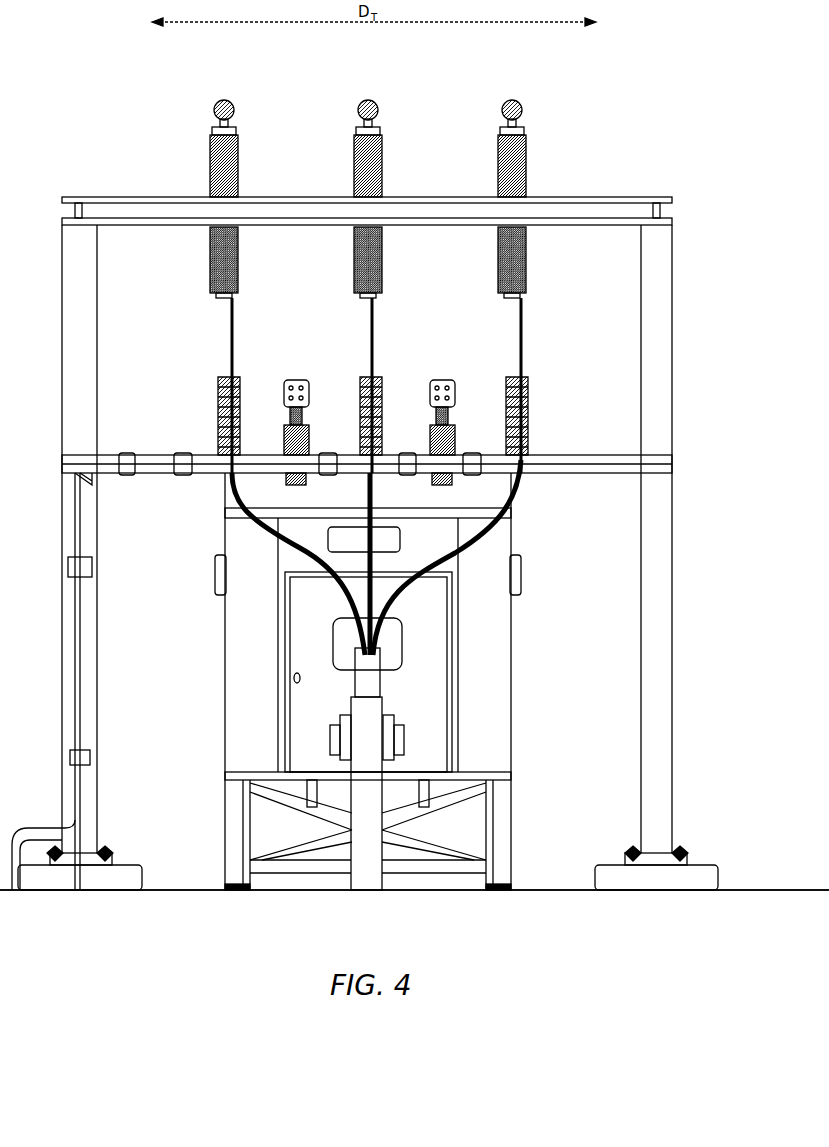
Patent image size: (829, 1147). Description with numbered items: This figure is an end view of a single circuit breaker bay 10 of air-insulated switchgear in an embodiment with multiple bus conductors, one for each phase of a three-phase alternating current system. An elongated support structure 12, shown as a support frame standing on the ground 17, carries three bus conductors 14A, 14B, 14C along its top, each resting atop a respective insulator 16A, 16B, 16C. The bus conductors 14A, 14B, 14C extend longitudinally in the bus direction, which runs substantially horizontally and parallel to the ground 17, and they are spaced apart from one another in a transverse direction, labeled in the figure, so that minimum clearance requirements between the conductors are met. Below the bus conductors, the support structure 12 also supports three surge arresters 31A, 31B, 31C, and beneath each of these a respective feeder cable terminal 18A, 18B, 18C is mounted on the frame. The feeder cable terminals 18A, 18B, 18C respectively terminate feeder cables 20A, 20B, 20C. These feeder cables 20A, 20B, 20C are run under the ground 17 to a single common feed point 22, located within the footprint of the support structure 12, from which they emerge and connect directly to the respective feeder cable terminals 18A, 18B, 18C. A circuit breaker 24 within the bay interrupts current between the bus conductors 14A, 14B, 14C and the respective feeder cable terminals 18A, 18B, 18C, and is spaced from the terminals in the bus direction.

The circuit breaker bay 10 is at (82, 103).
The support structure 12 is at (613, 196).
The bus conductor 14A is at (522, 113).
The bus conductor 14B is at (378, 113).
The bus conductor 14C is at (234, 113).
The insulator 16A is at (527, 162).
The insulator 16B is at (383, 182).
The insulator 16C is at (239, 182).
The surge arrester 31A is at (527, 267).
The surge arrester 31B is at (383, 267).
The surge arrester 31C is at (239, 267).
The feeder cable terminal 18A is at (524, 380).
The feeder cable terminal 18B is at (376, 380).
The feeder cable terminal 18C is at (236, 380).
The feeder cable 20A is at (491, 533).
The feeder cable 20B is at (376, 492).
The feeder cable 20C is at (250, 525).
The feed point 22 is at (349, 896).
The circuit breaker 24 is at (522, 703).
The ground 17 is at (547, 888).